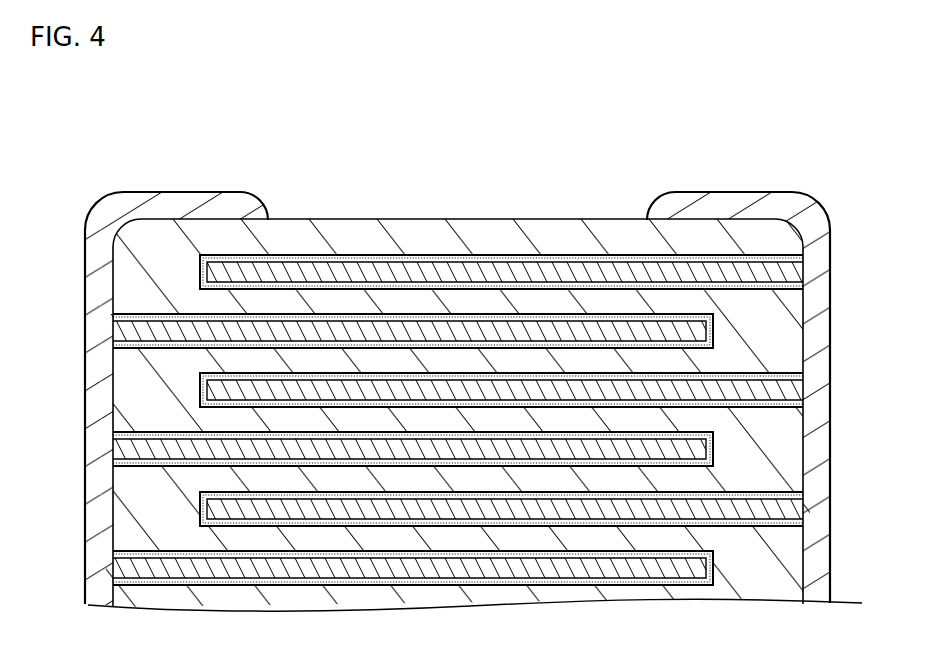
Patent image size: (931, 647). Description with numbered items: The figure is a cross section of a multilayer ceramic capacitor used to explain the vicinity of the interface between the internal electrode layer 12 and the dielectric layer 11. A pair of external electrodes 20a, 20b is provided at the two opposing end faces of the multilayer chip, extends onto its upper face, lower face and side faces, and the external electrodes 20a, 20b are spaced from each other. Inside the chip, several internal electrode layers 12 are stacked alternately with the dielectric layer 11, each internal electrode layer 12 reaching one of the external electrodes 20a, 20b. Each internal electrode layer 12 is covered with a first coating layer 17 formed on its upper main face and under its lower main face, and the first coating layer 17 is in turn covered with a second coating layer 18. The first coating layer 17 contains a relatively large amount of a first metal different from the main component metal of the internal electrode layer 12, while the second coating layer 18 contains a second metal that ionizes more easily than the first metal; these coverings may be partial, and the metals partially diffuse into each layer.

The dielectric layer 11 is at (650, 357).
The internal electrode layer 12 is at (797, 393).
The first coating layer 17 is at (797, 402).
The second coating layer 18 is at (792, 408).
The external electrode 20a is at (187, 200).
The external electrode 20b is at (782, 202).